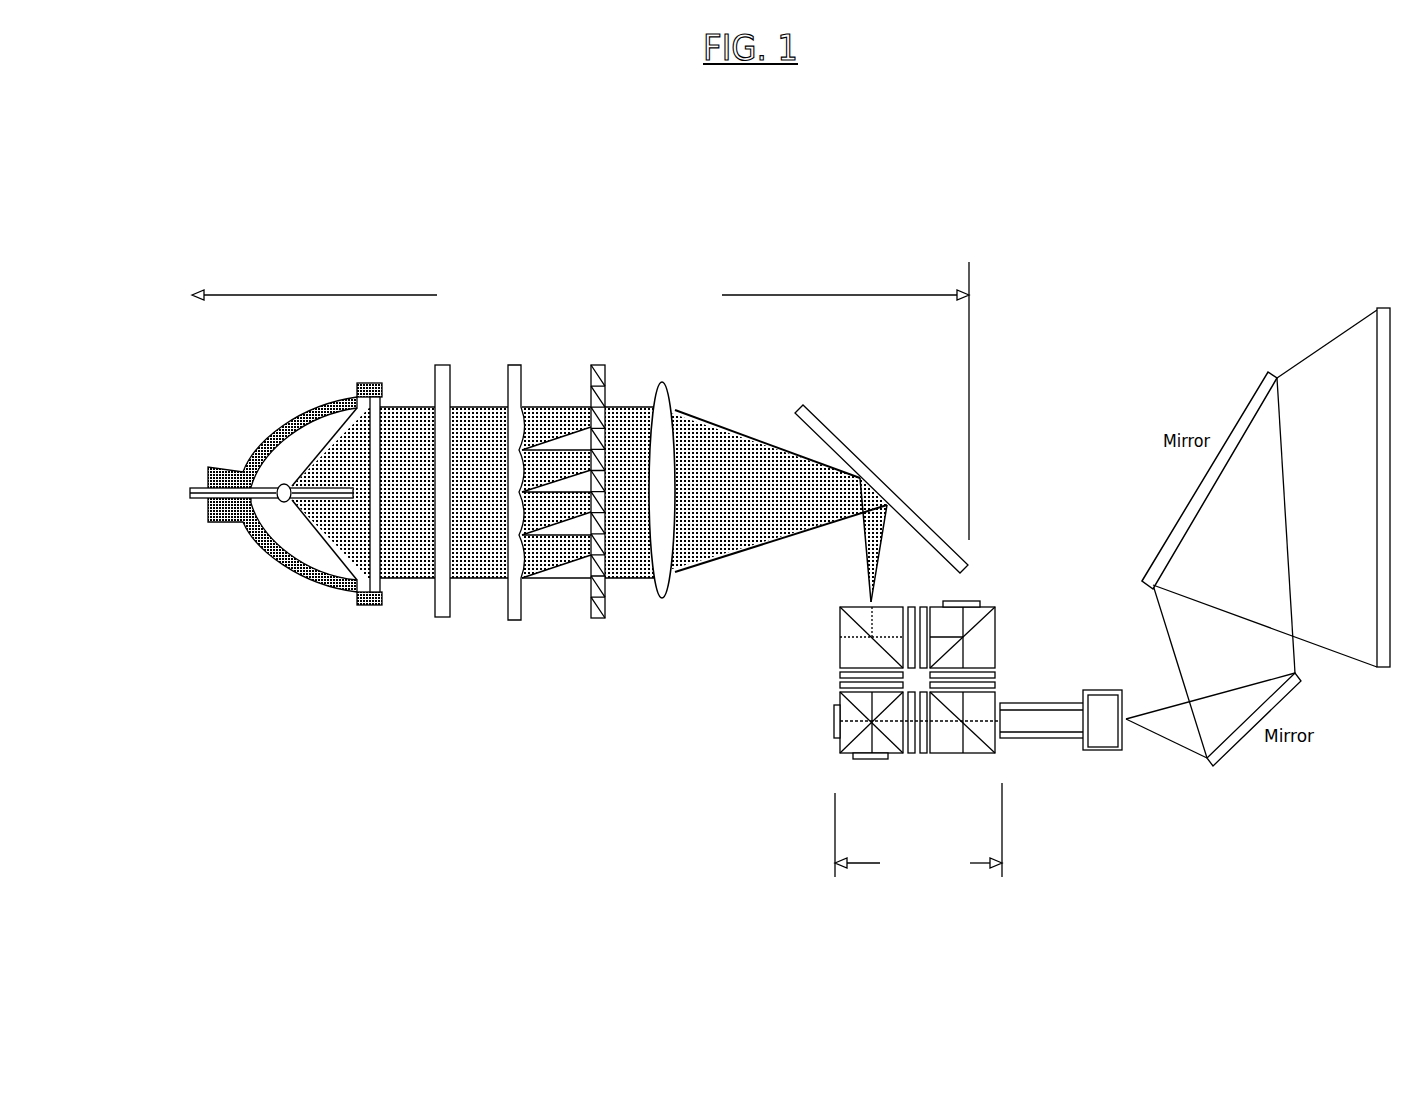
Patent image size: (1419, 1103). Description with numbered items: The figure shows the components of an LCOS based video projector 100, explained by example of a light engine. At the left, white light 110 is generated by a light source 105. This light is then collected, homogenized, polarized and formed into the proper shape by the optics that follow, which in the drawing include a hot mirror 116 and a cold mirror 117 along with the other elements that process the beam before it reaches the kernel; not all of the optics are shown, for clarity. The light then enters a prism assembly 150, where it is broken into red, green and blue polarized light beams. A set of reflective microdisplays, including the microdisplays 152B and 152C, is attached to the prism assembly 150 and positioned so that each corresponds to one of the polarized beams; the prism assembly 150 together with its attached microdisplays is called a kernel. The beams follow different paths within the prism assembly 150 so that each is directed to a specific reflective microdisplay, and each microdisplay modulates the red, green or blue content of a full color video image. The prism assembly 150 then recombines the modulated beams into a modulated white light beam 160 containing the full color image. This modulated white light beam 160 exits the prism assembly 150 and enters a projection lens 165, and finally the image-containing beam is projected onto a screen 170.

The LCOS based video projector 100 is at (192, 642).
The light source 105 is at (370, 620).
The white light 110 is at (420, 435).
The hot mirror 116 is at (447, 532).
The cold mirror 117 is at (881, 476).
The prism assembly 150 is at (818, 629).
The reflective microdisplay 152B is at (967, 601).
The reflective microdisplay 152C is at (863, 758).
The modulated white light beam 160 is at (1040, 717).
The projection lens 165 is at (1077, 748).
The screen 170 is at (1366, 339).